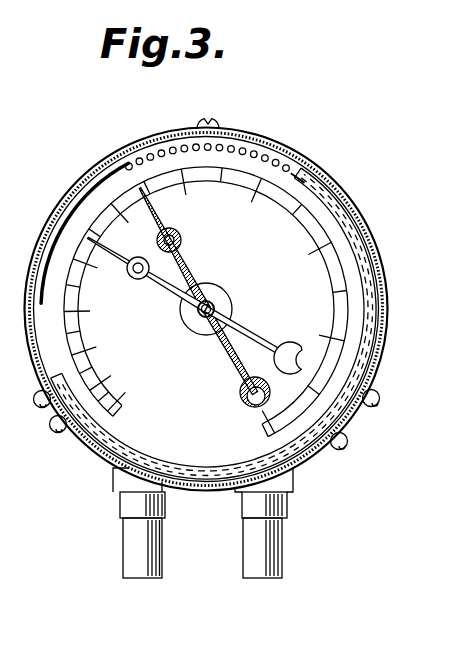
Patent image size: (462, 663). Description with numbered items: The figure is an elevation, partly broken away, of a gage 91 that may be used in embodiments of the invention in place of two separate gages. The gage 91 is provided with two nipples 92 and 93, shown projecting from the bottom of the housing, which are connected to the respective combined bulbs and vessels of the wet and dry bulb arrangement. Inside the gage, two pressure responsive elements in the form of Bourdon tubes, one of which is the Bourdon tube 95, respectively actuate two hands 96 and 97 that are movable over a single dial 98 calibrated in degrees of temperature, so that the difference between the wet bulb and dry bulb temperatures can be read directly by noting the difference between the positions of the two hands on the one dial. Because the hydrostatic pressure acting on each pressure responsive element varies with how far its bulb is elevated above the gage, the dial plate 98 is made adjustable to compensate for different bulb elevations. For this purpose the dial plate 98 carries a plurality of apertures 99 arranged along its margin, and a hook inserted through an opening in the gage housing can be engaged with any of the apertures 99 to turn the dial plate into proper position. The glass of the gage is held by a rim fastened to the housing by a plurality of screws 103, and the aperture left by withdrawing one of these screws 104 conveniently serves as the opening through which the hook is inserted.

The gage 91 is at (386, 320).
The nipple 92 is at (127, 552).
The nipple 93 is at (277, 550).
The Bourdon tube 95 is at (206, 309).
The hand 96 is at (190, 270).
The hand 97 is at (166, 288).
The dial 98 is at (291, 230).
The apertures 99 is at (295, 155).
The screws 103 is at (378, 402).
The screw 104 is at (216, 122).